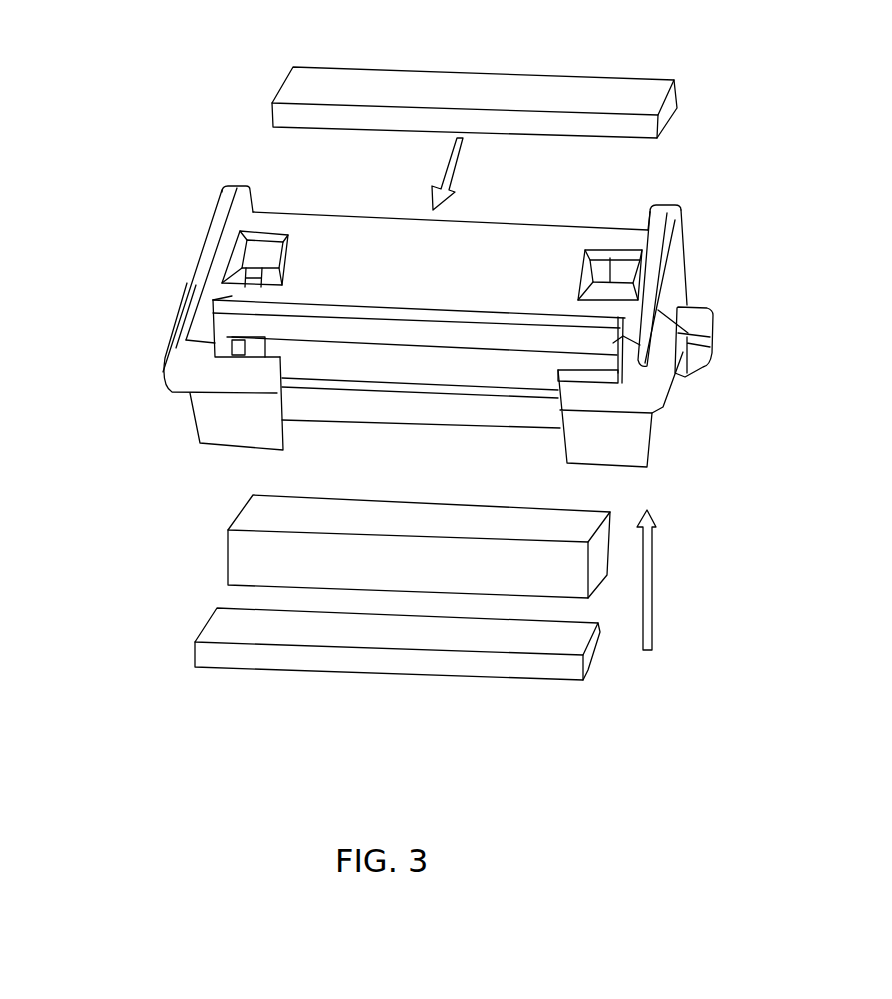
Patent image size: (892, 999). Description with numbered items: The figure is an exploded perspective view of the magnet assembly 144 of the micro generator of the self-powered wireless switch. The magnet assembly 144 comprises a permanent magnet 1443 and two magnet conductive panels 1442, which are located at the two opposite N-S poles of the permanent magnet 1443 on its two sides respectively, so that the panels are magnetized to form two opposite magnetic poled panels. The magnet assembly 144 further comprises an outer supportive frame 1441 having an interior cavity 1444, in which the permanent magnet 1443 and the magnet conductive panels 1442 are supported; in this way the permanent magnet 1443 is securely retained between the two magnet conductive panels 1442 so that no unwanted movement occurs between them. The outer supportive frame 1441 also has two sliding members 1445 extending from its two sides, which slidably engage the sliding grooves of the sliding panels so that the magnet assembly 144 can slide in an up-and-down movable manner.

The magnet assembly 144 is at (172, 190).
The outer supportive frame 1441 is at (560, 250).
The magnet conductive panels 1442 is at (455, 82).
The permanent magnet 1443 is at (258, 553).
The interior cavity 1444 is at (347, 368).
The sliding members 1445 is at (697, 313).